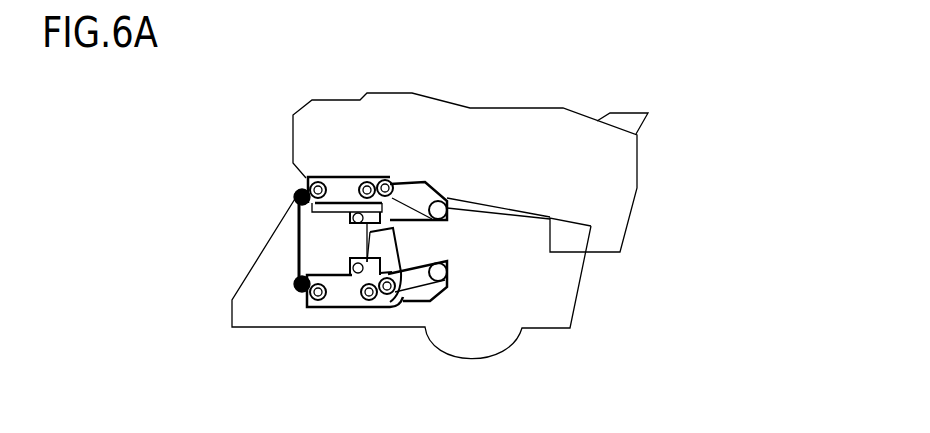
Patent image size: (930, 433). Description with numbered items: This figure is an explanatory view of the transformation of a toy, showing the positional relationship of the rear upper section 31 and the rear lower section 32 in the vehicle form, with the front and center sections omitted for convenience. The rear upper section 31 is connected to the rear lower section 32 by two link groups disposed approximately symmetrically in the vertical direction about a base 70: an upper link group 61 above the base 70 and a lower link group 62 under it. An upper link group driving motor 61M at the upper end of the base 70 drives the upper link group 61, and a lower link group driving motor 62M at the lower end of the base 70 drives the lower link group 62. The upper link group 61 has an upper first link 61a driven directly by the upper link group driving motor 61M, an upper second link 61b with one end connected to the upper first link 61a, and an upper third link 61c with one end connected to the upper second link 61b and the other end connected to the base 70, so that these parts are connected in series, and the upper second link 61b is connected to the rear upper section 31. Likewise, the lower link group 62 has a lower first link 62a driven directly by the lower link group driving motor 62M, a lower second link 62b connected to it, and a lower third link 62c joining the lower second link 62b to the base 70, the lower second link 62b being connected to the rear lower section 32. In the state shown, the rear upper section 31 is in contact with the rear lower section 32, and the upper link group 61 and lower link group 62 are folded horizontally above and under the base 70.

The rear upper section 31 is at (620, 158).
The rear lower section 32 is at (562, 305).
The upper link group 61 is at (412, 138).
The upper first link 61a is at (343, 187).
The upper second link 61b is at (407, 187).
The upper third link 61c is at (424, 228).
The upper link group driving motor 61M is at (296, 193).
The lower link group 62 is at (406, 327).
The lower first link 62a is at (346, 293).
The lower second link 62b is at (423, 298).
The lower third link 62c is at (415, 250).
The lower link group driving motor 62M is at (296, 283).
The base 70 is at (307, 243).